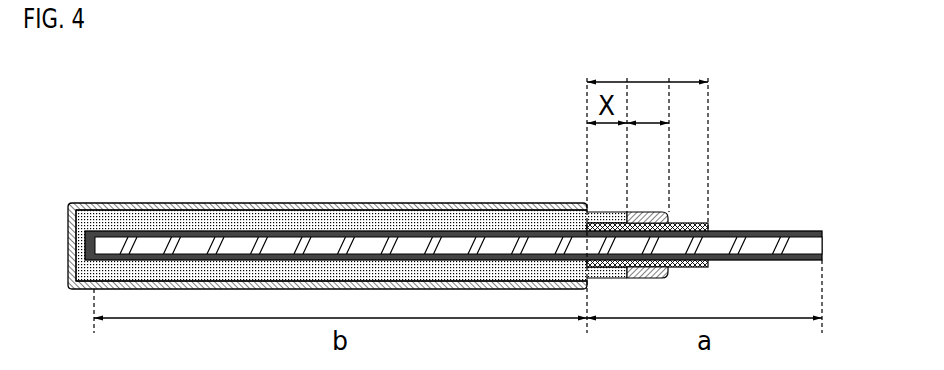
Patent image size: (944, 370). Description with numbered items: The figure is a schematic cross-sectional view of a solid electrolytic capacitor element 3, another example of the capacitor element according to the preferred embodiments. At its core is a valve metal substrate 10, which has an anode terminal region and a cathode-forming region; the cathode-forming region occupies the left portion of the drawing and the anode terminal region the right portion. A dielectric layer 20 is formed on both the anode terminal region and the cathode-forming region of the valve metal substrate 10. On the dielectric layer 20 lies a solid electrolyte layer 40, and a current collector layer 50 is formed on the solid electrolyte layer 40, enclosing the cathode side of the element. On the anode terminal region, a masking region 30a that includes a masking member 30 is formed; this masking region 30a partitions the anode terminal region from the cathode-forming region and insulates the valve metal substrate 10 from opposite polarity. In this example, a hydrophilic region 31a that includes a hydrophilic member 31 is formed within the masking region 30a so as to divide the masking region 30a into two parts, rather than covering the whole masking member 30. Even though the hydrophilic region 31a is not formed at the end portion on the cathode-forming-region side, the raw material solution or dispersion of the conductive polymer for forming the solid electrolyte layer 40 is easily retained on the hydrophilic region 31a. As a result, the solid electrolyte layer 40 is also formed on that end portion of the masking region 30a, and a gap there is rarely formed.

The solid electrolytic capacitor element 3 is at (213, 147).
The valve metal substrate 10 is at (767, 243).
The dielectric layer 20 is at (513, 232).
The masking member 30 is at (688, 223).
The masking region 30a is at (647, 67).
The hydrophilic member 31 is at (642, 222).
The hydrophilic region 31a is at (648, 108).
The solid electrolyte layer 40 is at (372, 220).
The current collector layer 50 is at (132, 207).